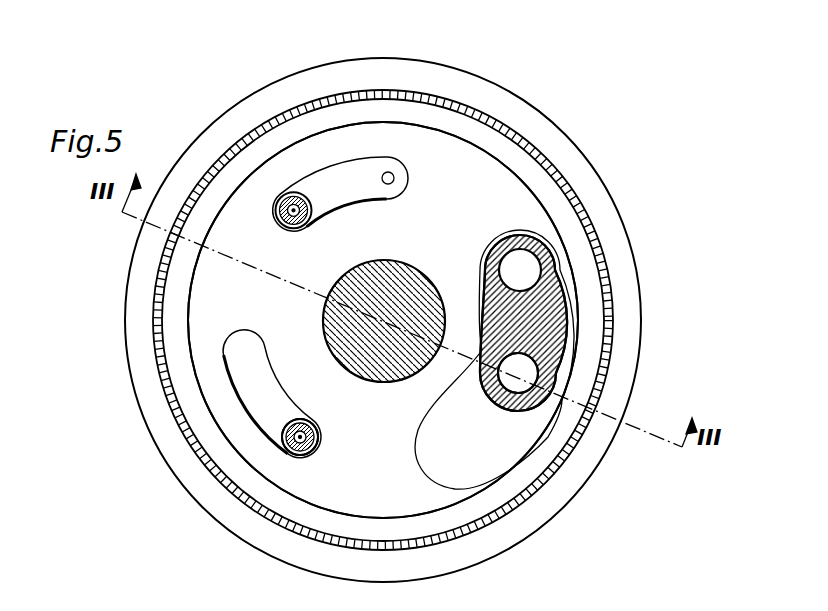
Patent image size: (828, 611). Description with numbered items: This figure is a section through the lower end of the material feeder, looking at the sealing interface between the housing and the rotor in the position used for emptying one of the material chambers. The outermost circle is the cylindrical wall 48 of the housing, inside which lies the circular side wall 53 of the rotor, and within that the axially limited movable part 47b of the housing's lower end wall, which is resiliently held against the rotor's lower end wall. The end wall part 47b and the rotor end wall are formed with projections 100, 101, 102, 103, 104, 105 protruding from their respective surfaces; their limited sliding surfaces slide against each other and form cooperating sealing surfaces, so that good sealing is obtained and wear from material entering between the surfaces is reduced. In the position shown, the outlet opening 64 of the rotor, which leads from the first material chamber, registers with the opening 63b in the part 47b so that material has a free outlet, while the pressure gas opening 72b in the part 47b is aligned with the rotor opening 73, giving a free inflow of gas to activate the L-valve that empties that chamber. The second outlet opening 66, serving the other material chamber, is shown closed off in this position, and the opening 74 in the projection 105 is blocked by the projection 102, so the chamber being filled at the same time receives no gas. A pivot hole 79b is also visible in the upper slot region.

The axially limited movable part 47b is at (200, 322).
The cylindrical wall 48 is at (215, 486).
The circular side wall 53 is at (170, 426).
The opening 63b is at (578, 352).
The first outlet opening 64 is at (548, 374).
The second outlet opening 66 is at (563, 260).
The opening 72b is at (300, 437).
The opening 73 is at (308, 425).
The opening 74 is at (281, 216).
The pivot hole 79b is at (394, 178).
The projection 100 is at (522, 423).
The projection 101 is at (255, 362).
The projection 102 is at (375, 190).
The projection 103 is at (550, 295).
The projection 104 is at (311, 453).
The projection 105 is at (312, 222).